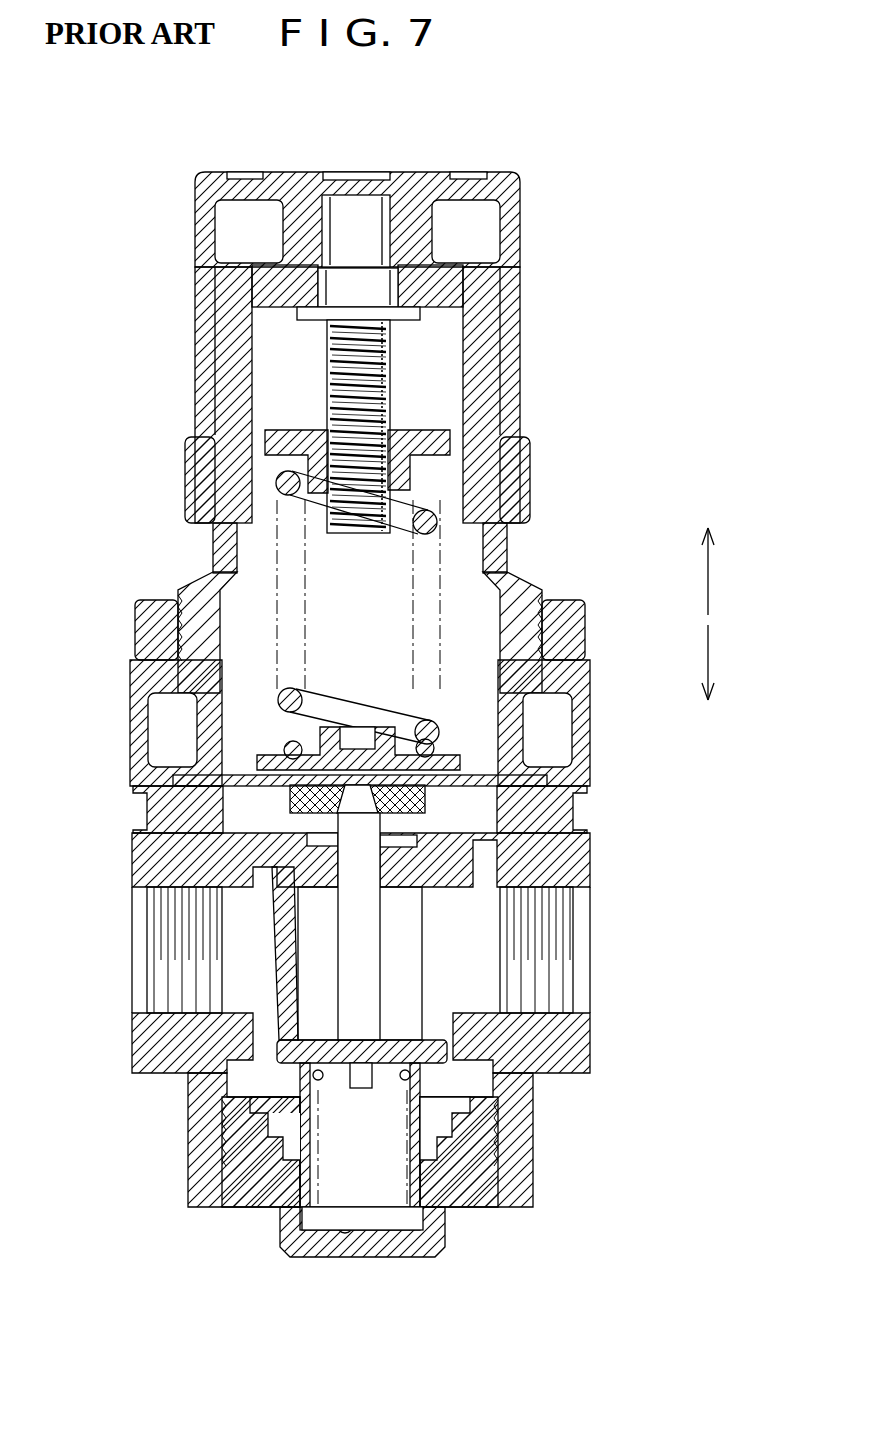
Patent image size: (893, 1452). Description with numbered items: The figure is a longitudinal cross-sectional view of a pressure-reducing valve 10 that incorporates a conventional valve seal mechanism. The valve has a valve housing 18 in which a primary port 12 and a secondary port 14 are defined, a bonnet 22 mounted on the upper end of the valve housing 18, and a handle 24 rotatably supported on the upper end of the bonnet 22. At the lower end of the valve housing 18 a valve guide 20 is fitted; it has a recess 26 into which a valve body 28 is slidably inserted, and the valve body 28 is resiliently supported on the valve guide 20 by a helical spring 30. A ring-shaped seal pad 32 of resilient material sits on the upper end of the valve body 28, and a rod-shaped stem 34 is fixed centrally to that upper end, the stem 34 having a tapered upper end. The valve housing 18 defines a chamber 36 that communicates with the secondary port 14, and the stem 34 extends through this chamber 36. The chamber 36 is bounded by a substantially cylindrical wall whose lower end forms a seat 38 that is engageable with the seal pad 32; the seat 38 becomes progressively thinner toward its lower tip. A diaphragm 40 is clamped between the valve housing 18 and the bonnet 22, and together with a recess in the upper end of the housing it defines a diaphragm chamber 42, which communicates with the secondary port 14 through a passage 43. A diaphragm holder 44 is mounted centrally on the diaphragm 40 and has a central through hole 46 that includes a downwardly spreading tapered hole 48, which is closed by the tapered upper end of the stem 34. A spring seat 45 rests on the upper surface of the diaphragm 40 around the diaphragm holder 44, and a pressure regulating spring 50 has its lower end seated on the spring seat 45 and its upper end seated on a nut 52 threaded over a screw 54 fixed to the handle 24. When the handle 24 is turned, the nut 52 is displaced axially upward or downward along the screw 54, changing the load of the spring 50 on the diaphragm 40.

The pressure-reducing valve 10 is at (559, 181).
The primary port 12 is at (180, 1000).
The secondary port 14 is at (545, 1000).
The valve housing 18 is at (592, 870).
The valve guide 20 is at (505, 1202).
The bonnet 22 is at (509, 558).
The handle 24 is at (405, 173).
The recess 26 is at (345, 1240).
The valve body 28 is at (380, 1085).
The helical spring 30 is at (430, 1218).
The seal pad 32 is at (450, 1058).
The stem 34 is at (353, 928).
The chamber 36 is at (424, 964).
The seat 38 is at (295, 1025).
The diaphragm 40 is at (503, 748).
The diaphragm chamber 42 is at (467, 810).
The passage 43 is at (560, 910).
The diaphragm holder 44 is at (305, 722).
The spring seat 45 is at (277, 748).
The central through hole 46 is at (290, 803).
The tapered hole 48 is at (280, 832).
The pressure regulating spring 50 is at (440, 737).
The nut 52 is at (440, 462).
The screw 54 is at (390, 376).